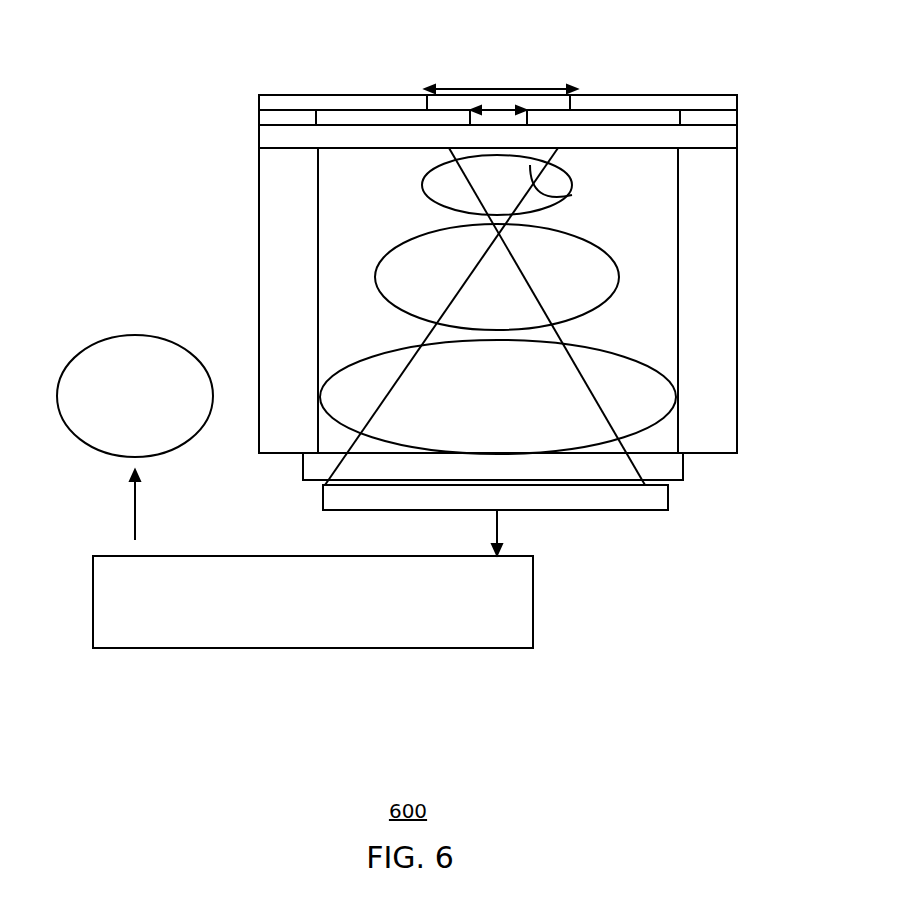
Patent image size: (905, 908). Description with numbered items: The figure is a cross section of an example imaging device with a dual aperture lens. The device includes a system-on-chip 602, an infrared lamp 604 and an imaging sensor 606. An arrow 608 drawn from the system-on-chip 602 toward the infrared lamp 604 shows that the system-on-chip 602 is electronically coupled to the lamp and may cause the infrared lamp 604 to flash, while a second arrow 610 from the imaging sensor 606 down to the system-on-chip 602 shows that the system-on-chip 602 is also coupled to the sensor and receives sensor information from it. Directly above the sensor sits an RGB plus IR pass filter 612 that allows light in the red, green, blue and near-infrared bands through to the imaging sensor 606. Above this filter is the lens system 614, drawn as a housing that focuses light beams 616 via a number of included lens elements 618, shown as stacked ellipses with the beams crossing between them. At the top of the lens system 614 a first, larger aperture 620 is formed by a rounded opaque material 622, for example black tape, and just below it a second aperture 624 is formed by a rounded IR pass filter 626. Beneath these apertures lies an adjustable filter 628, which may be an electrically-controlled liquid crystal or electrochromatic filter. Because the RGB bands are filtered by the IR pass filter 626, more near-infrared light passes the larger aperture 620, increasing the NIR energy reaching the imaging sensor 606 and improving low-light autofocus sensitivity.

The system-on-chip 602 is at (270, 652).
The infrared lamp 604 is at (100, 340).
The imaging sensor 606 is at (597, 513).
The arrow 608 is at (130, 495).
The arrow 610 is at (497, 525).
The RGB + IR pass filter 612 is at (683, 468).
The lens system 614 is at (259, 200).
The light beams 616 is at (355, 358).
The lens elements 618 is at (520, 272).
The first aperture 620 is at (538, 88).
The rounded opaque material 622 is at (303, 93).
The second aperture 624 is at (480, 108).
The rounded IR pass filter 626 is at (450, 108).
The adjustable filter 628 is at (737, 137).